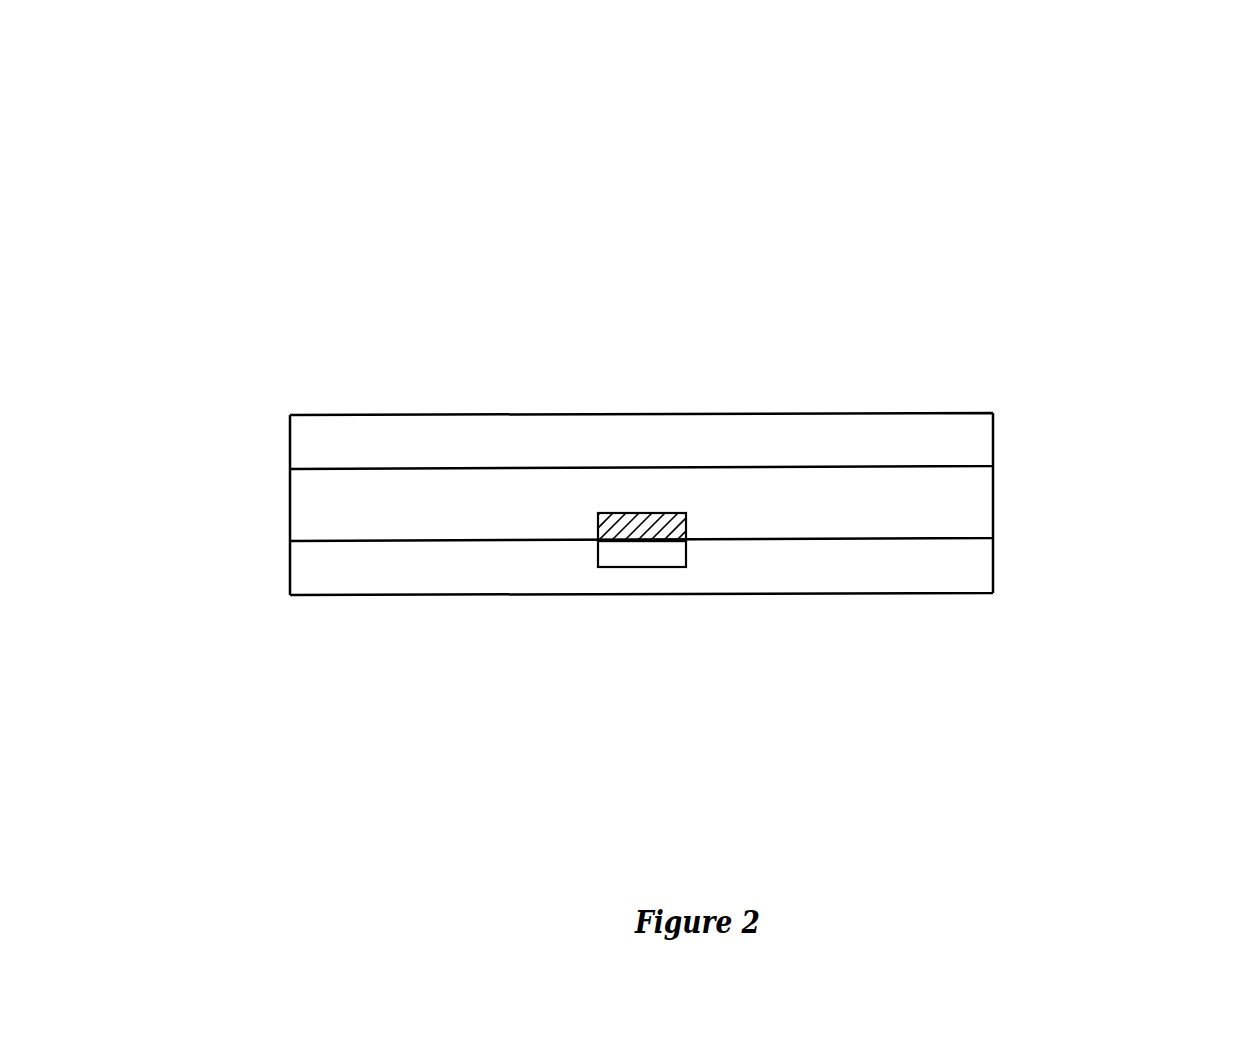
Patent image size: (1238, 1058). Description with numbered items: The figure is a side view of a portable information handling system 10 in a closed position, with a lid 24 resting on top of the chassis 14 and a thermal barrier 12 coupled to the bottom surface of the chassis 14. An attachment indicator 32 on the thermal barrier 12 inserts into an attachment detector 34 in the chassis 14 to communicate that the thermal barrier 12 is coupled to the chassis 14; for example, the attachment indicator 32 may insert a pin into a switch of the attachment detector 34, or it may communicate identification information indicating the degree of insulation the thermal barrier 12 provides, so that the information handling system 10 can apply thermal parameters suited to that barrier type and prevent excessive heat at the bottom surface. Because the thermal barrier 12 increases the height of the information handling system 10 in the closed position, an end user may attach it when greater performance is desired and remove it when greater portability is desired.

The portable information handling system 10 is at (367, 136).
The lid 24 is at (1005, 432).
The chassis 14 is at (1005, 496).
The thermal barrier 12 is at (1005, 559).
The attachment detector 34 is at (603, 500).
The attachment indicator 32 is at (662, 578).